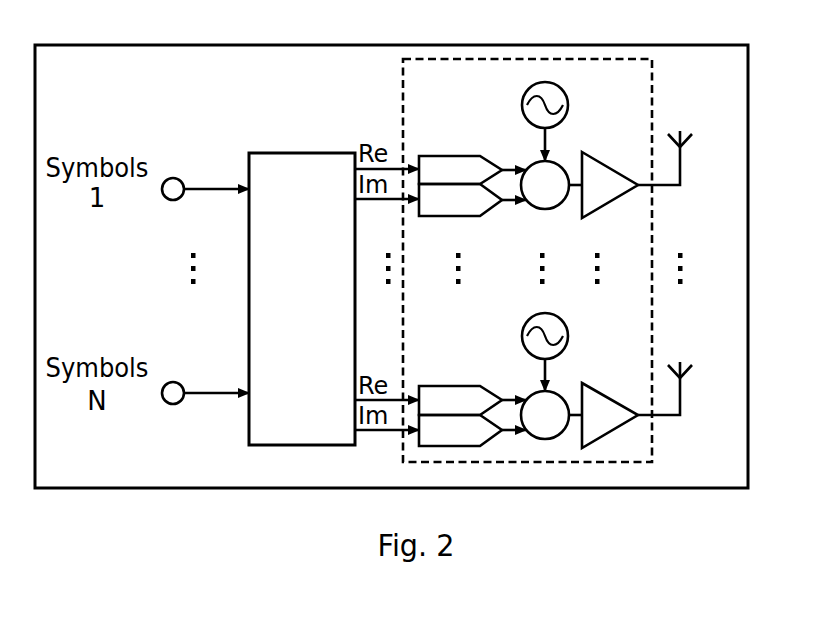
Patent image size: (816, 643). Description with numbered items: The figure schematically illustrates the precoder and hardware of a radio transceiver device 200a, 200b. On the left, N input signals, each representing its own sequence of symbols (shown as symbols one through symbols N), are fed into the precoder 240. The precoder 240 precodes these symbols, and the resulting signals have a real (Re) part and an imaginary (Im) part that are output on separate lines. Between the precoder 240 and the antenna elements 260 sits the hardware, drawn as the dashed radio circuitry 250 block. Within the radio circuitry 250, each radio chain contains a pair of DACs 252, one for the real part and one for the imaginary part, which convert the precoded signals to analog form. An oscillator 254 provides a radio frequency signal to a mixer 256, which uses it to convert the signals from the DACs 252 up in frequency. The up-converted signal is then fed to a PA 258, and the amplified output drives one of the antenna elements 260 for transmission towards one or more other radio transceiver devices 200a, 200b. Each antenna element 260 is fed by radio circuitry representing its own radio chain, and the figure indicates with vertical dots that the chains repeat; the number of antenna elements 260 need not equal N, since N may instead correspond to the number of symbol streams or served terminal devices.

The radio transceiver device 200a is at (187, 468).
The radio transceiver device 200b is at (391, 266).
The precoder 240 is at (295, 153).
The radio circuitry 250 is at (463, 336).
The DACs 252 is at (447, 155).
The oscillators 254 is at (567, 101).
The mixers 256 is at (524, 208).
The PAs 258 is at (601, 206).
The antenna elements 260 is at (682, 158).